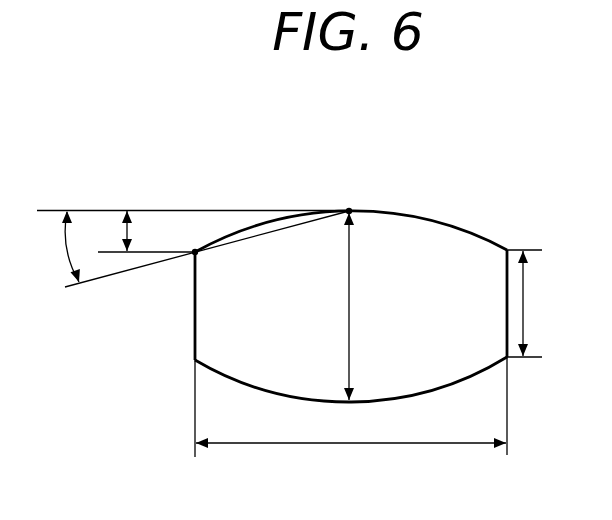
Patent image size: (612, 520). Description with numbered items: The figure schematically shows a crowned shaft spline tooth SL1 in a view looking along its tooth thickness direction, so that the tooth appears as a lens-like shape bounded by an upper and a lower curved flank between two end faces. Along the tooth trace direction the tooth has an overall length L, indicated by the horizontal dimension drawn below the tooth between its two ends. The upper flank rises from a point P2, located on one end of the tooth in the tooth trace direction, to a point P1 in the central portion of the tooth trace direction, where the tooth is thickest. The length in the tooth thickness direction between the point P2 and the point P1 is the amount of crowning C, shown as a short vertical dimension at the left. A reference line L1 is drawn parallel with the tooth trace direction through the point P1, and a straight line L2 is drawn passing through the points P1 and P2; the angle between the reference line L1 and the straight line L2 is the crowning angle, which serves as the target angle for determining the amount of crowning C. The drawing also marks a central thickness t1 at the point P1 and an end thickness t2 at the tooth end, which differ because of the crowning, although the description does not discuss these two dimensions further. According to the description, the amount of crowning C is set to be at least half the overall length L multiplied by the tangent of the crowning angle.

The crowned shaft spline tooth SL1 is at (408, 248).
The reference line L1 is at (78, 210).
The straight line L2 is at (98, 277).
The point in the central portion P1 is at (351, 197).
The point on an end P2 is at (197, 236).
The amount of crowning C is at (146, 231).
The center thickness of lens t1 is at (363, 306).
The edge thickness of lens t2 is at (532, 303).
The overall length L is at (351, 407).